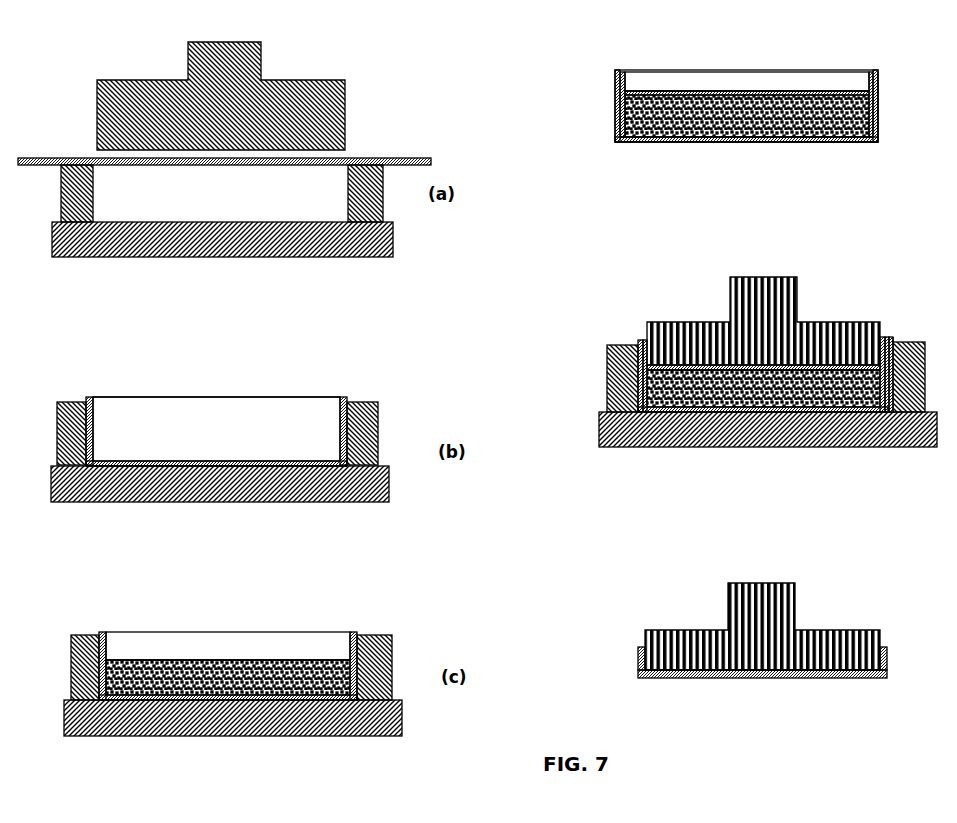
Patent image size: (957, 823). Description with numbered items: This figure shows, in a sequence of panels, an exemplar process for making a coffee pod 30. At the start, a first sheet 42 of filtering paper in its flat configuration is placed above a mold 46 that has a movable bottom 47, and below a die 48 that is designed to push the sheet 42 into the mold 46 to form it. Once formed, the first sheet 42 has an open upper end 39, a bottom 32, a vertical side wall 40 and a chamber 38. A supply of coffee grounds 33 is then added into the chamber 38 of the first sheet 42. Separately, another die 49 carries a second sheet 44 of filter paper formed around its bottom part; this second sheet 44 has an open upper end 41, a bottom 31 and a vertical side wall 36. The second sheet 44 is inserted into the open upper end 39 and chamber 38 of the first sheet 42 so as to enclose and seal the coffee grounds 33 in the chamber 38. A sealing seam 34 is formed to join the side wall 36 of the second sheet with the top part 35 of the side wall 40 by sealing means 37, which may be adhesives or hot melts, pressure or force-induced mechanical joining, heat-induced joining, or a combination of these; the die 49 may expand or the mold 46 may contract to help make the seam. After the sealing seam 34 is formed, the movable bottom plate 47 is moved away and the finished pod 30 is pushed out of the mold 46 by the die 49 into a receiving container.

The pod 30 is at (592, 73).
The bottom 31 is at (668, 90).
The bottom 32 is at (157, 466).
The supply of coffee grounds 33 is at (168, 695).
The sealing seam 34 is at (889, 87).
The top part 35 is at (342, 408).
The vertical side wall 36 is at (868, 77).
The sealing means 37 is at (873, 73).
The chamber 38 is at (195, 438).
The open upper end 39 is at (162, 402).
The vertical side wall 40 is at (95, 452).
The open upper end 41 is at (722, 85).
The first sheet 42 is at (218, 177).
The second sheet 44 is at (792, 77).
The mold 46 is at (61, 187).
The movable bottom 47 is at (52, 238).
The die 48 is at (345, 100).
The die 49 is at (813, 322).